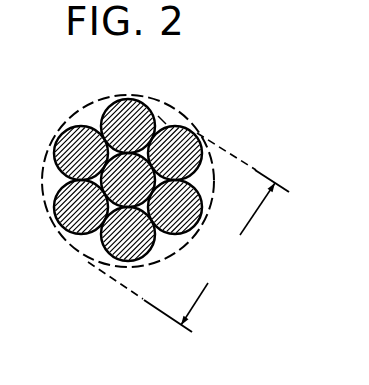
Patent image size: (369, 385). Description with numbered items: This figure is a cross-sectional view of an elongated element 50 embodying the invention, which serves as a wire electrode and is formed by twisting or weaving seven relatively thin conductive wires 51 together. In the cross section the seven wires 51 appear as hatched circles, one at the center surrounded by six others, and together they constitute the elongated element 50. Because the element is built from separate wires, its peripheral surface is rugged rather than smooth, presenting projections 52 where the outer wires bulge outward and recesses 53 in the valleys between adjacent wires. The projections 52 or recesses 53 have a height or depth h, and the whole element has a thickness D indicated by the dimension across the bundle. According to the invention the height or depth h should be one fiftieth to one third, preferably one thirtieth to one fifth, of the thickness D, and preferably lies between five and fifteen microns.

The elongated element 50 is at (285, 119).
The thin conductive wires 51 is at (199, 134).
The projections 52 is at (131, 103).
The recesses 53 is at (90, 112).
The height or depth of projections or recesses h is at (162, 119).
The thickness of the elongated element D is at (188, 232).